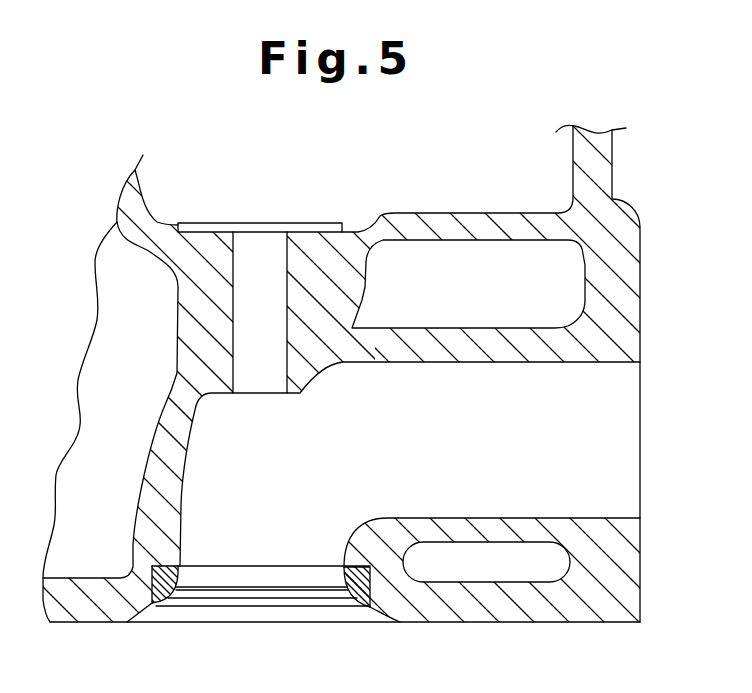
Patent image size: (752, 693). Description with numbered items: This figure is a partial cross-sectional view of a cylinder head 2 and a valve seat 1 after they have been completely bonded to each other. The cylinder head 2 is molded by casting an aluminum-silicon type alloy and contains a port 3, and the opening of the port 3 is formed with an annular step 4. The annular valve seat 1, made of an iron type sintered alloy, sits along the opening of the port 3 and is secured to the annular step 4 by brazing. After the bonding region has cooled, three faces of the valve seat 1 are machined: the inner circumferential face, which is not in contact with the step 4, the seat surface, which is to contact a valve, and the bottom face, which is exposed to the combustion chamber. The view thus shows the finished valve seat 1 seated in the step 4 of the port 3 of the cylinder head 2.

The valve seat 1 is at (288, 607).
The cylinder head 2 is at (630, 272).
The port 3 is at (613, 363).
The annular step 4 is at (346, 572).